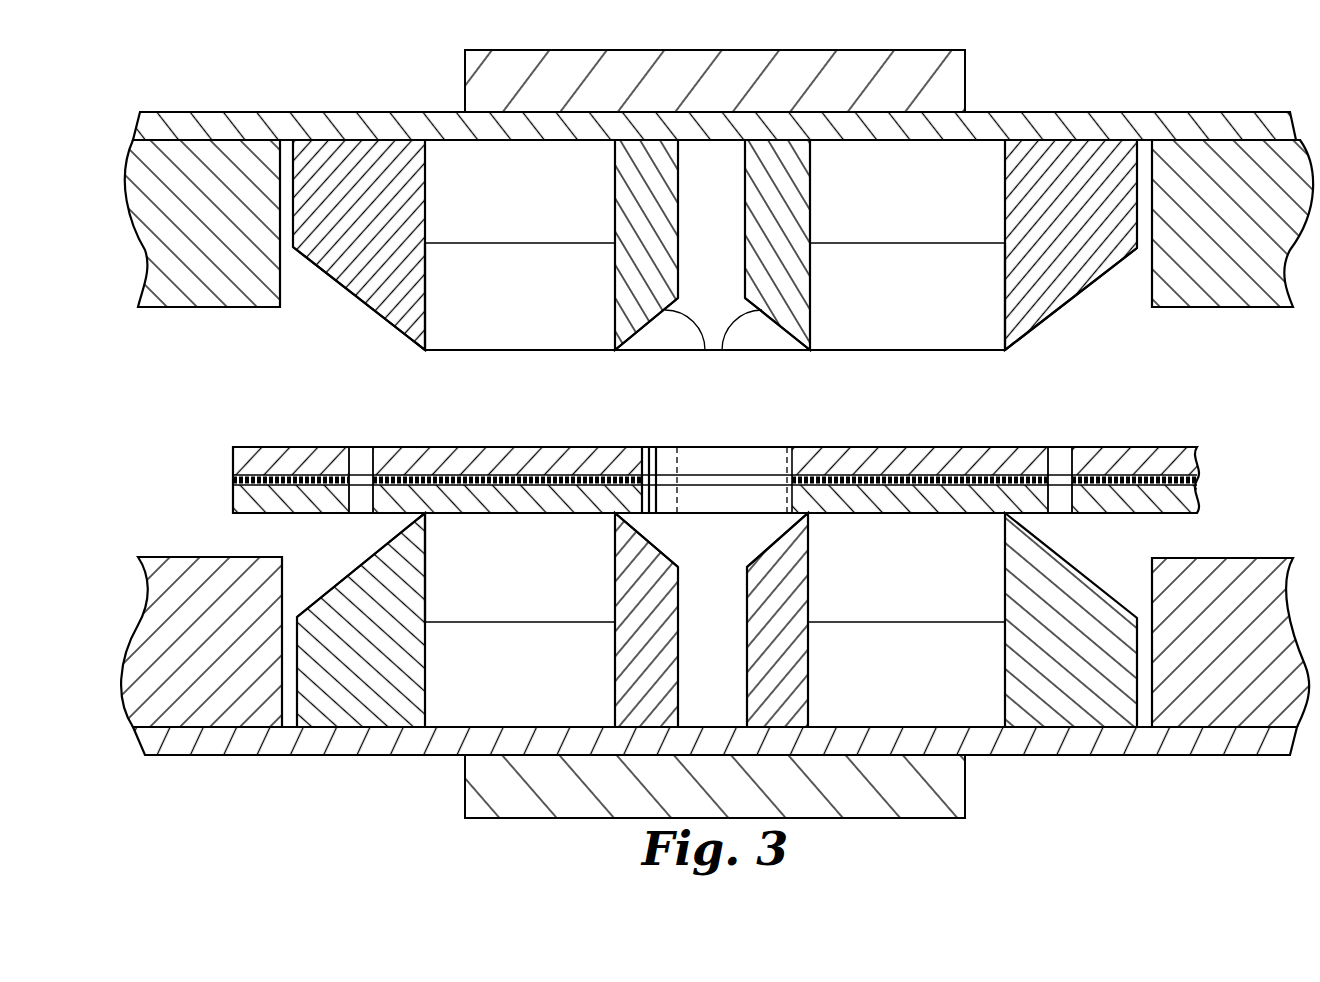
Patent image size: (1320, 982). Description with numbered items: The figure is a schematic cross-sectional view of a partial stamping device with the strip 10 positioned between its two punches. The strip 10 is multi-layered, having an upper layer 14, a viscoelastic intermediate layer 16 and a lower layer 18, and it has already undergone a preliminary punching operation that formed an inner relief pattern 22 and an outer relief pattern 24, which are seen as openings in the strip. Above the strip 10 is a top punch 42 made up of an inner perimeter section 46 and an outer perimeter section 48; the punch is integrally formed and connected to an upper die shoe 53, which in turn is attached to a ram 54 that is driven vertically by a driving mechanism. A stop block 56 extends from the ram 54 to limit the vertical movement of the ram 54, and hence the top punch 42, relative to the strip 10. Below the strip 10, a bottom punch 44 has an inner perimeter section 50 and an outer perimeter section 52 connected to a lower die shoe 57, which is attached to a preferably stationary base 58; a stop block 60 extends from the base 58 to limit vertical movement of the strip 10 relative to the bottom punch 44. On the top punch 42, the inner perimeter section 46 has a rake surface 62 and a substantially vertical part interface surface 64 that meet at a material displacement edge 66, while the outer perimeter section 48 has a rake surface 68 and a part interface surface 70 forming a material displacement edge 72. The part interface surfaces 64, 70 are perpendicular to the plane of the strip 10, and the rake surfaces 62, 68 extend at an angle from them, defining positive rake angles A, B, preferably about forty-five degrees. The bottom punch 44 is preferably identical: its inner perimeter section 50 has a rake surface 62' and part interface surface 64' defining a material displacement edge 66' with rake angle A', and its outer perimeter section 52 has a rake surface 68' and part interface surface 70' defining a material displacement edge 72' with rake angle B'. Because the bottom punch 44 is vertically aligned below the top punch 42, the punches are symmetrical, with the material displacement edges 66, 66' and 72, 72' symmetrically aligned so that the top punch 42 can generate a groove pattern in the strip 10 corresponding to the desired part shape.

The strip 10 is at (230, 445).
The upper layer 14 is at (1199, 452).
The intermediate layer 16 is at (1201, 480).
The lower layer 18 is at (1198, 506).
The inner relief pattern 22 is at (741, 460).
The outer relief pattern 24 is at (357, 445).
The top punch 42 is at (882, 198).
The bottom punch 44 is at (885, 691).
The inner perimeter section 46 is at (611, 177).
The outer perimeter section 48 is at (333, 280).
The inner perimeter section 50 is at (613, 683).
The outer perimeter section 52 is at (325, 587).
The upper die shoe 53 is at (181, 122).
The ram 54 is at (472, 82).
The stop block 56 is at (190, 295).
The lower die shoe 57 is at (245, 742).
The base 58 is at (472, 785).
The stop block 60 is at (167, 557).
The rake surface 62 is at (713, 354).
The rake surface 62' is at (711, 540).
The part interface surface 64 is at (715, 225).
The part interface surface 64' is at (715, 606).
The material displacement edge 66 is at (713, 353).
The material displacement edge 66' is at (617, 468).
The rake surface 68 is at (715, 299).
The rake surface 68' is at (361, 565).
The part interface surface 70 is at (715, 296).
The part interface surface 70' is at (457, 567).
The material displacement edge 72 is at (716, 373).
The material displacement edge 72' is at (424, 471).
The rake angle A is at (712, 292).
The rake angle B is at (715, 272).
The rake angle A' is at (571, 545).
The rake angle B' is at (471, 560).